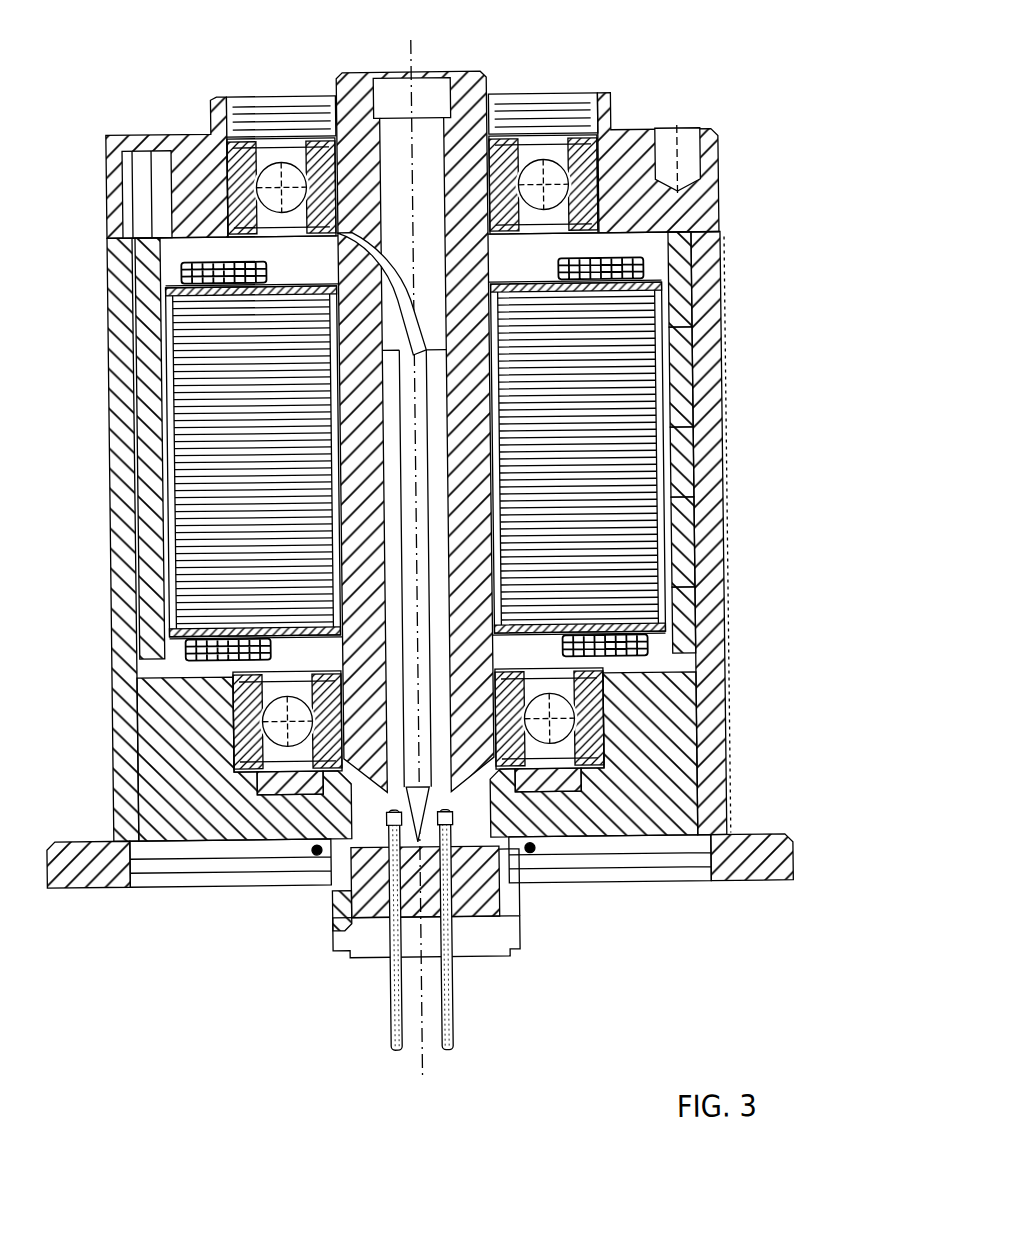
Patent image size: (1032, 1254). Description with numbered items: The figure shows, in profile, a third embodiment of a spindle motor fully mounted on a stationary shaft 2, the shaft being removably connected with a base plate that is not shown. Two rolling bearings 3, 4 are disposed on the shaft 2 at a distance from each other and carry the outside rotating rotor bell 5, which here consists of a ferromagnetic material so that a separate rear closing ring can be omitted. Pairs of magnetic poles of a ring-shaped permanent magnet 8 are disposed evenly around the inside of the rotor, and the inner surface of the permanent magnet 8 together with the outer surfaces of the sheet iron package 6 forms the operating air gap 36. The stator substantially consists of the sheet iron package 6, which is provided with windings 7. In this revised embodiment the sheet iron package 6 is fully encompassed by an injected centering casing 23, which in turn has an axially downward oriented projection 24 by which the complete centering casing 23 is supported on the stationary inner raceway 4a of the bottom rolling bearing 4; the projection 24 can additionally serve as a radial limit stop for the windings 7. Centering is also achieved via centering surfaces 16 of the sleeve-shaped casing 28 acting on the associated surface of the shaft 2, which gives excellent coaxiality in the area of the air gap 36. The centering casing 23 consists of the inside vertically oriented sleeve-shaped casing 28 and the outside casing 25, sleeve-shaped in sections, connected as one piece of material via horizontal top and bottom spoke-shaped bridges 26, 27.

The stationary shaft 2 is at (530, 833).
The rolling bearing 3 is at (654, 155).
The bottom rolling bearing 4 is at (615, 719).
The stationary inner raceway 4a is at (320, 765).
The rotor bell 5 is at (710, 804).
The sheet iron package 6 is at (696, 355).
The windings 7 is at (617, 261).
The permanent magnet 8 is at (676, 461).
The centering surface 16 is at (498, 895).
The centering casing 23 is at (645, 505).
The projection 24 is at (686, 628).
The outside casing 25 is at (696, 567).
The top spoke-shaped bridge 26 is at (660, 267).
The bottom spoke-shaped bridge 27 is at (688, 659).
The sleeve-shaped casing 28 is at (670, 302).
The operating air gap 36 is at (671, 413).